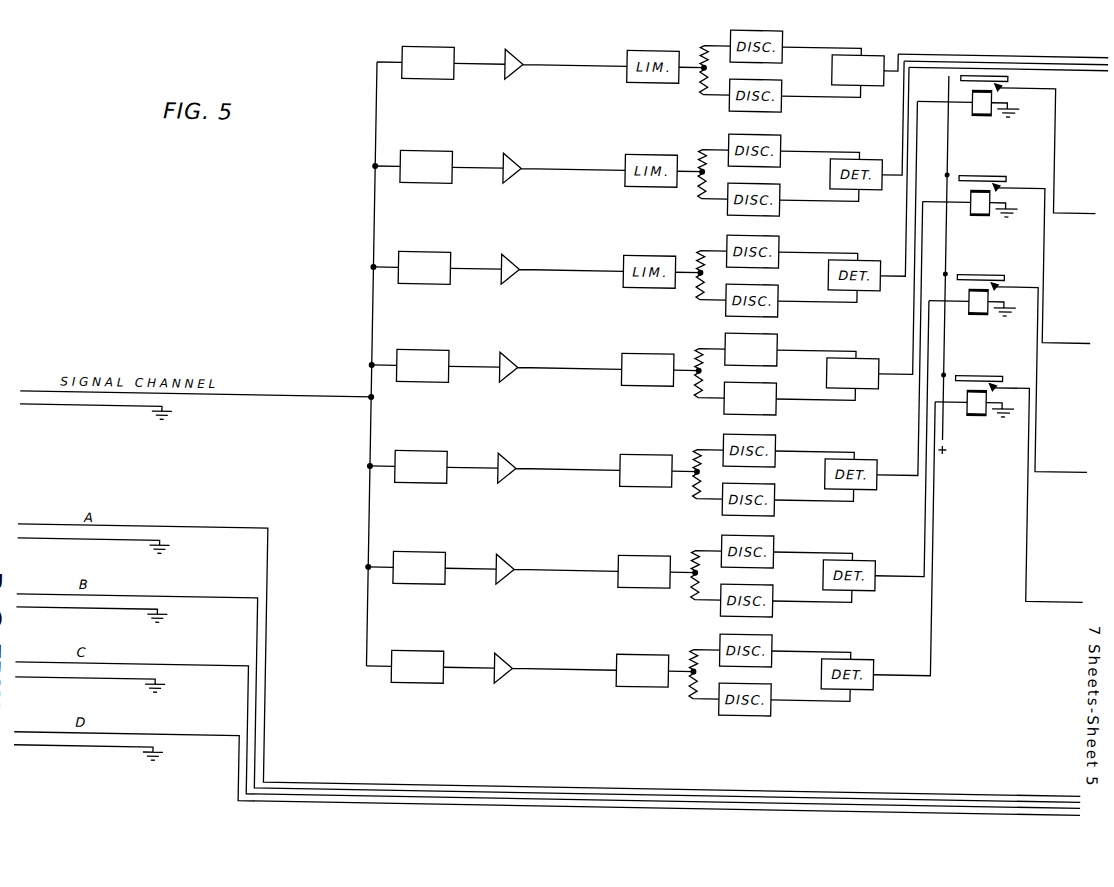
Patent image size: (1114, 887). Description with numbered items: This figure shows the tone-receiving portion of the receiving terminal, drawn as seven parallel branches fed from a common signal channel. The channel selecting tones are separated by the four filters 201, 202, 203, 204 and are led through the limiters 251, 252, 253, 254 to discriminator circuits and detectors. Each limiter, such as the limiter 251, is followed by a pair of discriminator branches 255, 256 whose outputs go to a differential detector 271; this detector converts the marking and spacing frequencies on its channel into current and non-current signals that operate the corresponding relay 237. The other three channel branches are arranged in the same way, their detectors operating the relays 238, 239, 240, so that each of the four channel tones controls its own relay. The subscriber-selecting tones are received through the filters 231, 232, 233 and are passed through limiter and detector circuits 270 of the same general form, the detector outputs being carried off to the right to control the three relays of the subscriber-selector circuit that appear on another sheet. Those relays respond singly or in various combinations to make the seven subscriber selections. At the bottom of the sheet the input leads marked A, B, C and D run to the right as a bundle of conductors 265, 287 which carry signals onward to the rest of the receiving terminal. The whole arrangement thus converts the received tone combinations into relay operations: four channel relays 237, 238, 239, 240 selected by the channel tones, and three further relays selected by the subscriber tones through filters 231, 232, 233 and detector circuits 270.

The filter 231 is at (421, 78).
The filter 232 is at (421, 182).
The filter 233 is at (421, 283).
The filter 204 is at (421, 381).
The filter 203 is at (421, 482).
The filter 202 is at (421, 583).
The filter 201 is at (421, 682).
The limiter 251 is at (638, 381).
The limiter 252 is at (638, 482).
The limiter 253 is at (638, 583).
The limiter 254 is at (638, 682).
The discriminator branch 255 is at (783, 333).
The discriminator branch 256 is at (782, 401).
The limiter and detector circuit 270 is at (872, 77).
The differential detector 271 is at (869, 380).
The relay 237 is at (981, 105).
The relay 238 is at (980, 205).
The relay 239 is at (978, 304).
The relay 240 is at (976, 405).
The output conductor 265 is at (779, 783).
The output conductor 287 is at (863, 789).